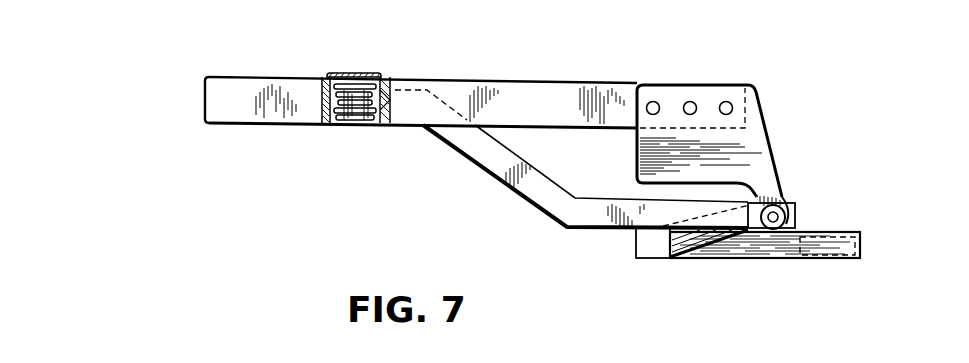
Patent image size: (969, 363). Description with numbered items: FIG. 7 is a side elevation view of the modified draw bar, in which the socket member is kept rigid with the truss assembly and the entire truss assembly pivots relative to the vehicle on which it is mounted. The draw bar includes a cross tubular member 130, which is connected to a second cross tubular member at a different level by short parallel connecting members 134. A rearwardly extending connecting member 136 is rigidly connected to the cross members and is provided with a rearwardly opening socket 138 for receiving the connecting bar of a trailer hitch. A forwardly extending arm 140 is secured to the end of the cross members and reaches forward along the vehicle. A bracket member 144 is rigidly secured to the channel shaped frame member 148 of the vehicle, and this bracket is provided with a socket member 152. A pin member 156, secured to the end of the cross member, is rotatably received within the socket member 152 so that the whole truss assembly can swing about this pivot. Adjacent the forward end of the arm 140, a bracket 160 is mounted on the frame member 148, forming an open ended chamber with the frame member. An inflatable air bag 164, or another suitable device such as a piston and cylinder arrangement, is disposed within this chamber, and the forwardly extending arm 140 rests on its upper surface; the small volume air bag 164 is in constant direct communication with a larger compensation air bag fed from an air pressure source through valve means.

The cross tubular member 130 is at (636, 257).
The connecting member 134 is at (702, 238).
The rearwardly extending connecting member 136 is at (772, 250).
The socket 138 is at (862, 247).
The forwardly extending arm 140 is at (500, 165).
The bracket member 144 is at (767, 155).
The frame member 148 is at (517, 90).
The socket member 152 is at (782, 197).
The pin member 156 is at (790, 215).
The bracket 160 is at (372, 78).
The inflatable air bag 164 is at (347, 122).